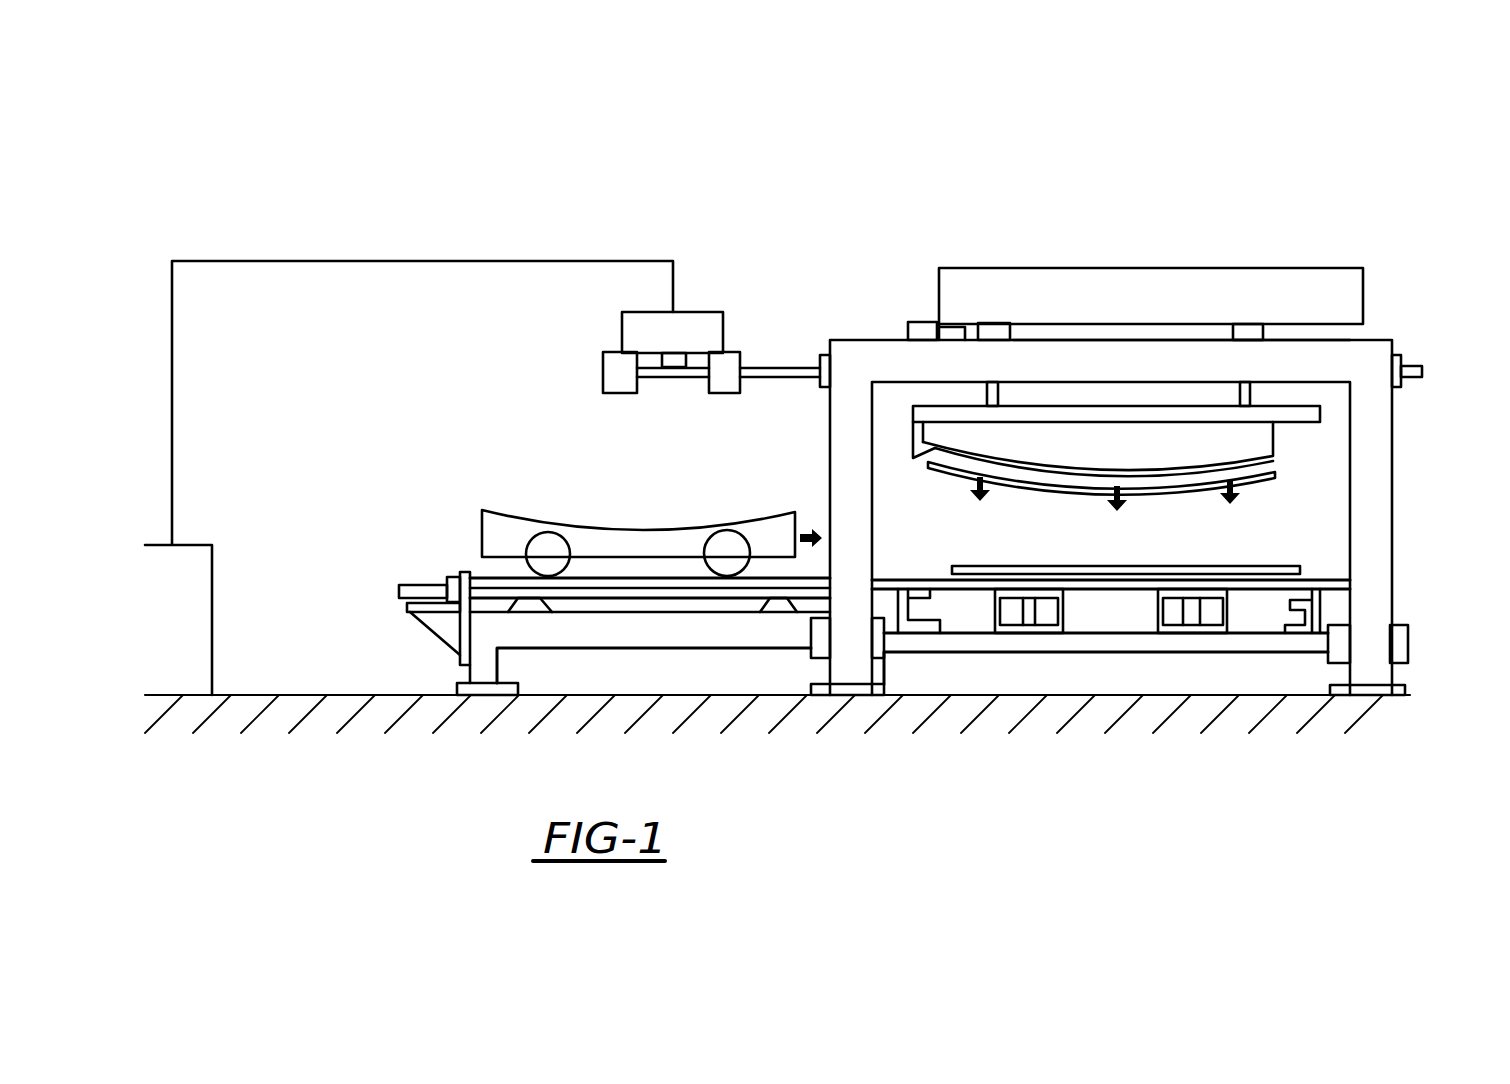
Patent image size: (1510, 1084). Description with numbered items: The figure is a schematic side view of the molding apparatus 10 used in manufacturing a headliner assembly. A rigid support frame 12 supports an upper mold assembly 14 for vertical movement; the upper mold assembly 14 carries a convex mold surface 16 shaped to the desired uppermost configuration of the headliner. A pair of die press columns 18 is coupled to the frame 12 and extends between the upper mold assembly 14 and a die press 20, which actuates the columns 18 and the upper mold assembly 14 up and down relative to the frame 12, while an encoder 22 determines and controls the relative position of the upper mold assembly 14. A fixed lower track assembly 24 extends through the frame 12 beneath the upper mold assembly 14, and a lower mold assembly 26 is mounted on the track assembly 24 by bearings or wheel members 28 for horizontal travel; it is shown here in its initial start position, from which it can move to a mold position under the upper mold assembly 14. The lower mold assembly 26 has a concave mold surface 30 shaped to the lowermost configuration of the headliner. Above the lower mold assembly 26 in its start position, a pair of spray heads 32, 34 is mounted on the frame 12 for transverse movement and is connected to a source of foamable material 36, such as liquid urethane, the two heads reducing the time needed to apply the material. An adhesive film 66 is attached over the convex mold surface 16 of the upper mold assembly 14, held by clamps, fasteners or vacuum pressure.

The molding apparatus 10 is at (1160, 188).
The rigid support frame 12 is at (1392, 593).
The upper mold assembly 14 is at (1320, 412).
The convex mold surface 16 is at (1175, 470).
The die press columns 18 is at (1296, 368).
The die press 20 is at (1300, 272).
The encoder 22 is at (903, 322).
The lower track assembly 24 is at (885, 575).
The lower mold assembly 26 is at (482, 540).
The wheel members 28 is at (560, 567).
The concave mold surface 30 is at (638, 530).
The spray head 32 is at (603, 375).
The spray head 34 is at (740, 393).
The source of foamable material 36 is at (217, 642).
The adhesive film 66 is at (1270, 482).